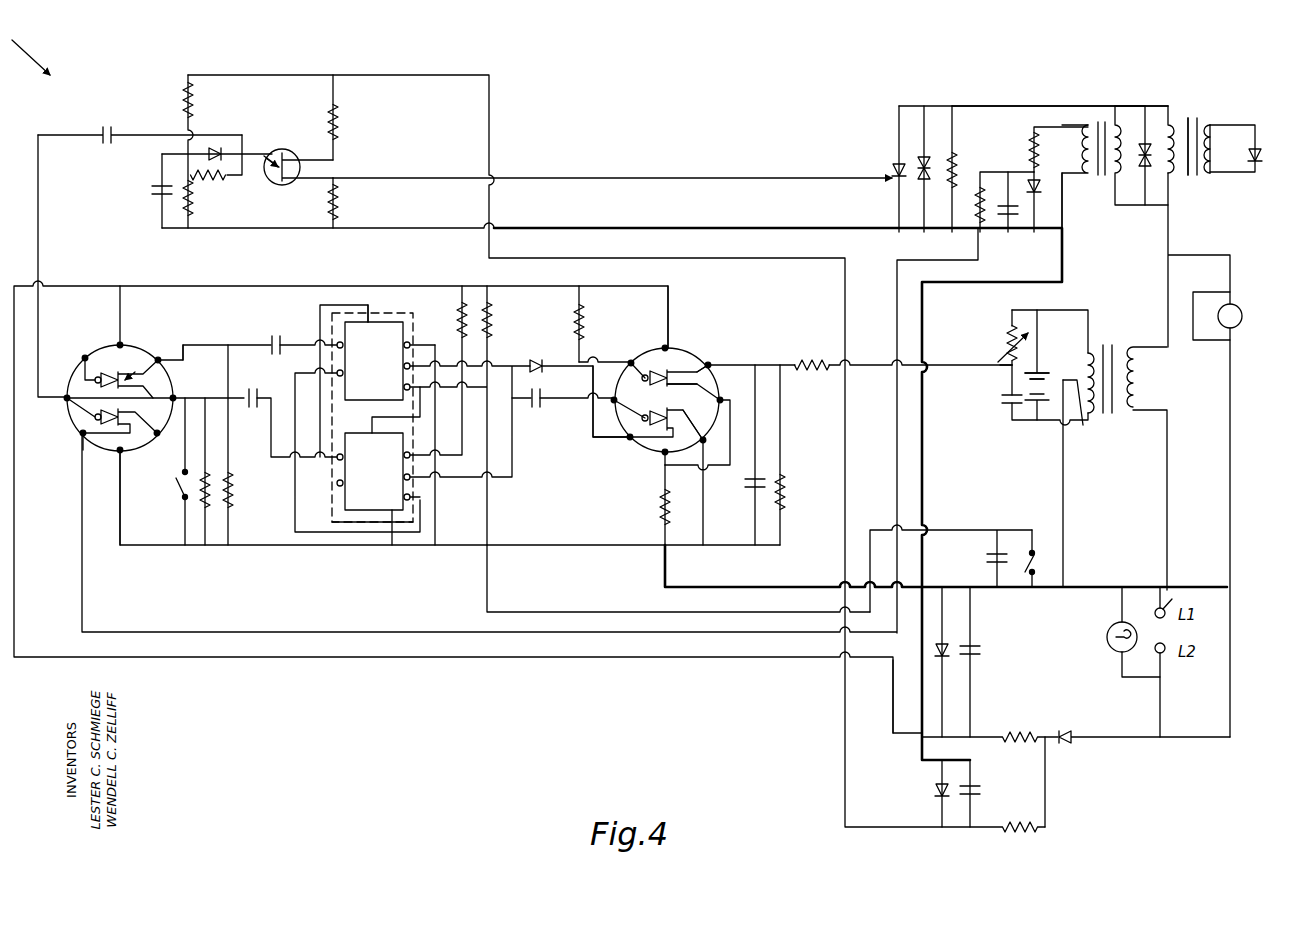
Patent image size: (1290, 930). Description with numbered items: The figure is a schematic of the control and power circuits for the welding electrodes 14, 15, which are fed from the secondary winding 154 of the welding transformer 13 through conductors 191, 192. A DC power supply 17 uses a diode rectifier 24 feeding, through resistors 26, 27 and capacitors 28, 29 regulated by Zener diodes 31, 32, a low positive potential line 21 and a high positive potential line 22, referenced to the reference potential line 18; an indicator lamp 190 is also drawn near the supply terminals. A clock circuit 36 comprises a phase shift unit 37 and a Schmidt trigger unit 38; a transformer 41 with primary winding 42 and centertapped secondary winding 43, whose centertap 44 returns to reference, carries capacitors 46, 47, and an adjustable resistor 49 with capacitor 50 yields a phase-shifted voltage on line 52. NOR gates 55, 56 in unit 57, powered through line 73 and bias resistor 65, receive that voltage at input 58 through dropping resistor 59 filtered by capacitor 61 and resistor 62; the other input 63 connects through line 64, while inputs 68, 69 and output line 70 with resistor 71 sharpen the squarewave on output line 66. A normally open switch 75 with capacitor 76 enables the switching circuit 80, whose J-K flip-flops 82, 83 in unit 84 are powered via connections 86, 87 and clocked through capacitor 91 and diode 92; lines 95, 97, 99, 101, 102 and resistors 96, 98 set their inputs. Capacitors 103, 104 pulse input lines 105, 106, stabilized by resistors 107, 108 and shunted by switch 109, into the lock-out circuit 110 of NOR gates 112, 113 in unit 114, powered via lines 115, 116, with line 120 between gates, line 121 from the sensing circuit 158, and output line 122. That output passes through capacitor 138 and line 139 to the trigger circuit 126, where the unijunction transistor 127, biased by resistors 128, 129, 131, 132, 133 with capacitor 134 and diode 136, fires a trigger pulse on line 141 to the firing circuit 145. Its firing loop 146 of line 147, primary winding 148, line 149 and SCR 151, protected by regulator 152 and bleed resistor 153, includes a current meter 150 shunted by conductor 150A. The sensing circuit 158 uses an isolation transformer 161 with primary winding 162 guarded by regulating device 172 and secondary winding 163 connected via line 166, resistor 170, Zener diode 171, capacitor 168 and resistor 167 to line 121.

The welding transformer 13 is at (1193, 173).
The welding electrode 14 is at (1257, 148).
The welding electrode 15 is at (1245, 172).
The DC power supply 17 is at (1088, 782).
The reference potential line 18 is at (165, 230).
The low positive potential line 21 is at (228, 288).
The high positive potential line 22 is at (381, 73).
The diode rectifier 24 is at (1073, 742).
The resistor 26 is at (1022, 730).
The resistor 27 is at (1035, 825).
The capacitor 28 is at (978, 645).
The capacitor 29 is at (973, 790).
The Zener diode 31 is at (940, 645).
The Zener diode 32 is at (937, 789).
The clock circuit 36 is at (1102, 454).
The phase shift unit 37 is at (1045, 435).
The Schmidt trigger unit 38 is at (728, 364).
The transformer 41 is at (1109, 415).
The primary winding 42 is at (1136, 346).
The secondary winding 43 is at (1090, 350).
The centertap 44 is at (1075, 427).
The capacitor 46 is at (1040, 422).
The capacitor 47 is at (1040, 348).
The adjustable resistor 49 is at (1002, 330).
The capacitor 50 is at (1002, 408).
The line 52 is at (997, 380).
The NOR gate 55 is at (660, 368).
The NOR gate 56 is at (663, 404).
The unit 57 is at (710, 360).
The input line 58 is at (688, 352).
The dropping resistor 59 is at (817, 373).
The capacitor 61 is at (758, 478).
The resistor 62 is at (782, 486).
The input 63 is at (676, 384).
The line 64 is at (714, 468).
The bias resistor 65 is at (670, 516).
The output line 66 is at (600, 360).
The input 68 is at (691, 440).
The input 69 is at (660, 455).
The output line 70 is at (628, 436).
The resistor 71 is at (578, 318).
The line 73 is at (670, 302).
The normally open switch 75 is at (1036, 558).
The capacitor 76 is at (987, 558).
The switching circuit 80 is at (318, 552).
The J-K flip-flop 82 is at (406, 330).
The J-K flip-flop 83 is at (392, 546).
The unit 84 is at (402, 317).
The operating voltage connection 86 is at (370, 318).
The operating voltage connection 87 is at (372, 522).
The capacitor 91 is at (540, 406).
The diode 92 is at (538, 362).
The line 95 is at (438, 516).
The resistor 96 is at (490, 320).
The line 97 is at (488, 518).
The resistor 98 is at (463, 295).
The line 99 is at (294, 504).
The line 101 is at (320, 305).
The line 102 is at (382, 416).
The capacitor 103 is at (272, 340).
The capacitor 104 is at (241, 400).
The input line 105 is at (200, 344).
The input line 106 is at (198, 386).
The resistor 107 is at (232, 480).
The resistor 108 is at (207, 478).
The switch 109 is at (180, 482).
The lock-out circuit 110 is at (78, 358).
The NOR gate 112 is at (130, 352).
The NOR gate 113 is at (118, 447).
The unit 114 is at (77, 437).
The line 115 is at (118, 303).
The line 116 is at (122, 507).
The line 120 is at (173, 397).
The line 121 is at (80, 532).
The output line 122 is at (53, 402).
The trigger circuit 126 is at (190, 68).
The unijunction transistor 127 is at (288, 150).
The resistor 128 is at (338, 116).
The resistor 129 is at (340, 200).
The resistor 131 is at (215, 177).
The resistor 132 is at (184, 92).
The resistor 133 is at (186, 207).
The capacitor 134 is at (152, 188).
The diode 136 is at (216, 146).
The capacitor 138 is at (103, 130).
The line 139 is at (128, 135).
The line 141 is at (395, 178).
The firing circuit 145 is at (896, 86).
The firing loop 146 is at (893, 120).
The line 147 is at (1168, 245).
The primary winding 148 is at (1168, 116).
The line 149 is at (968, 104).
The current meter 150 is at (1236, 304).
The low resistance conductor 150A is at (1202, 334).
The SCR 151 is at (895, 161).
The voltage regulator device 152 is at (922, 152).
The resistor 153 is at (950, 152).
The secondary winding 154 is at (1213, 122).
The sensing circuit 158 is at (993, 124).
The isolation transformer 161 is at (1103, 124).
The primary winding 162 is at (1117, 180).
The secondary winding 163 is at (1092, 185).
The line 166 is at (1065, 227).
The resistor 167 is at (980, 180).
The capacitor 168 is at (1015, 182).
The resistor 170 is at (1042, 148).
The Zener diode 171 is at (1037, 218).
The voltage regulating device 172 is at (1147, 202).
The lamp 190 is at (1110, 643).
The conductor 191 is at (1232, 171).
The conductor 192 is at (1254, 115).